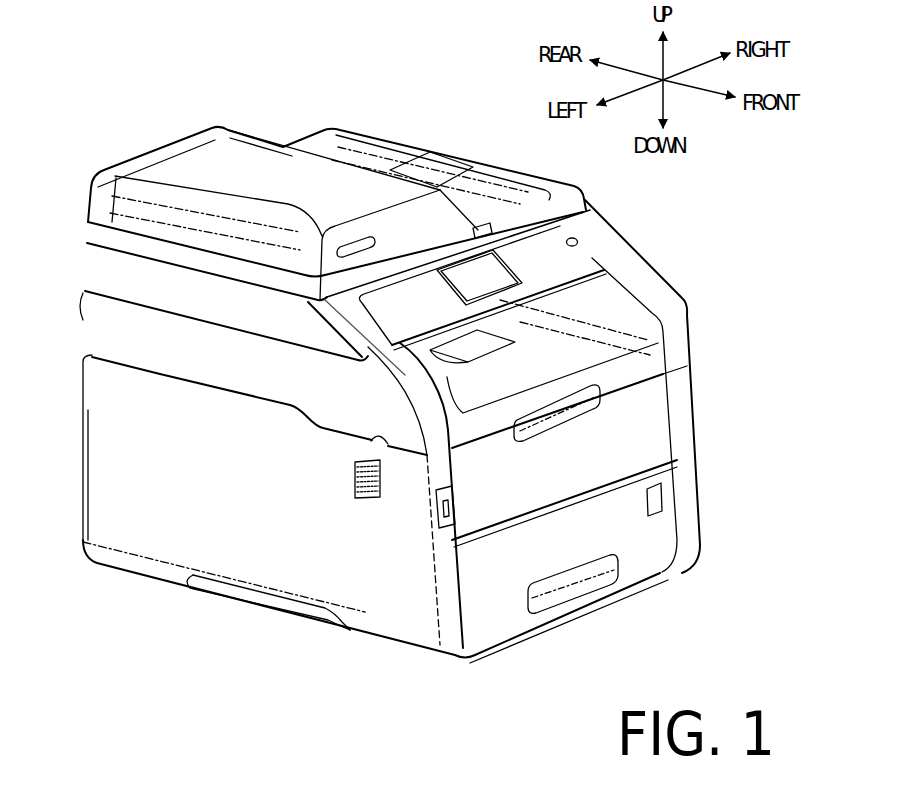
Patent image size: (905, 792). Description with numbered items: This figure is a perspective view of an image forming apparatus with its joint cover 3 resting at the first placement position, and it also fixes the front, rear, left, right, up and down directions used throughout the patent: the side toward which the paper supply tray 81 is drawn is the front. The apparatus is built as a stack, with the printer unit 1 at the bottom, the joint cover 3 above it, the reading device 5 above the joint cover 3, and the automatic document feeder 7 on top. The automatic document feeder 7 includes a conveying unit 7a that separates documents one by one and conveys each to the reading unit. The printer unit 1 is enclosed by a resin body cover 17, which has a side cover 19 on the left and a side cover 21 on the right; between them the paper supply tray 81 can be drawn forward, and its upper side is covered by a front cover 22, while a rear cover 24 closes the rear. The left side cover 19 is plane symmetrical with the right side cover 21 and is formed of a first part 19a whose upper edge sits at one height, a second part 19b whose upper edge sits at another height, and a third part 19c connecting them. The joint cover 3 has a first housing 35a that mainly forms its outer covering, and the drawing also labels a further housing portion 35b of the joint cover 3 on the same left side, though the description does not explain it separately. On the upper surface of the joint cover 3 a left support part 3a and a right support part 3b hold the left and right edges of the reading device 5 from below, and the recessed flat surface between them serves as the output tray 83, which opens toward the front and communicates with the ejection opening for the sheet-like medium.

The printer unit 1 is at (104, 465).
The joint cover 3 is at (103, 332).
The left support part 3a is at (437, 425).
The right support part 3b is at (680, 332).
The reading device 5 is at (104, 275).
The automatic document feeder 7 is at (103, 190).
The conveying unit 7a is at (268, 168).
The body cover 17 is at (131, 542).
The side cover 19 is at (380, 603).
The first part 19a is at (373, 437).
The second part 19b is at (193, 370).
The third part 19c is at (313, 416).
The side cover 21 is at (688, 504).
The front cover 22 is at (627, 433).
The rear cover 24 is at (83, 388).
The first housing 35a is at (150, 357).
The second seam portion 35b is at (282, 328).
The paper supply tray 81 is at (630, 567).
The output tray 83 is at (563, 362).